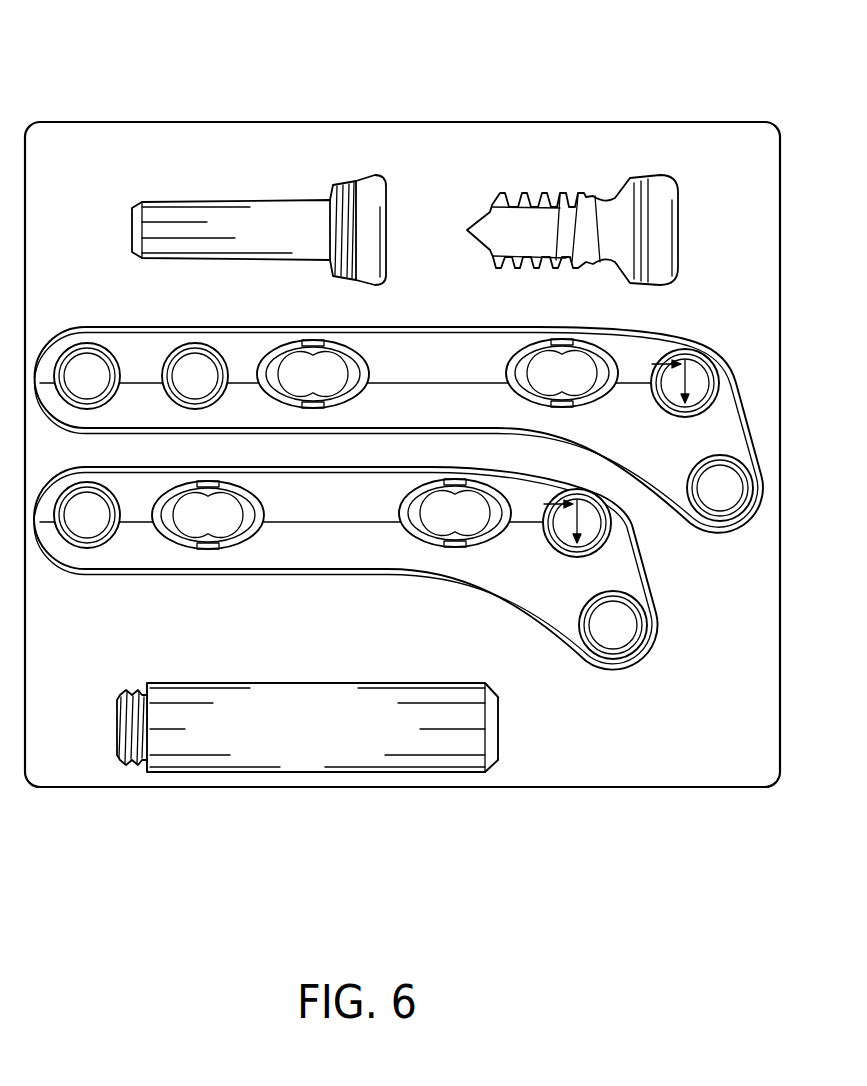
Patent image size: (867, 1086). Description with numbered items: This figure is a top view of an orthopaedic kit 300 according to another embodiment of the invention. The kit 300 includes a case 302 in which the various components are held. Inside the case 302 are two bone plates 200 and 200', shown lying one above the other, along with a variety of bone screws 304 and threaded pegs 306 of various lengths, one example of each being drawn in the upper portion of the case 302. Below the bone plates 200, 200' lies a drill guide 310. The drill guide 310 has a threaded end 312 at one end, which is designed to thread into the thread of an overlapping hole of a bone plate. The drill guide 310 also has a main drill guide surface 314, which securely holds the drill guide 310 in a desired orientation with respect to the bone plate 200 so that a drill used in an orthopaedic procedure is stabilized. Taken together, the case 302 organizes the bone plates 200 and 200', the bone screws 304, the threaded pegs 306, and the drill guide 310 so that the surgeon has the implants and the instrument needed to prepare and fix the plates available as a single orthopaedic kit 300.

The orthopaedic kit 300 is at (402, 431).
The case 302 is at (475, 121).
The bone screws 304 is at (590, 210).
The threaded pegs 306 is at (280, 212).
The bone plate 200 is at (399, 402).
The bone plate 200' is at (346, 568).
The drill guide 310 is at (266, 770).
The main drill guide surface 314 is at (322, 727).
The threaded end 312 is at (117, 752).